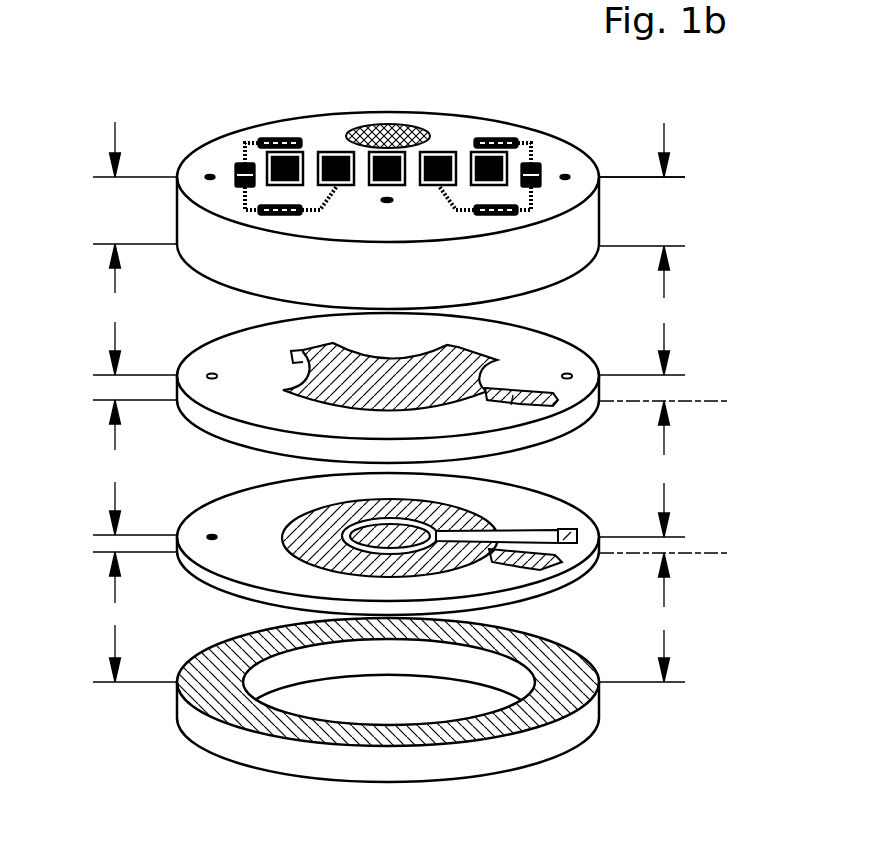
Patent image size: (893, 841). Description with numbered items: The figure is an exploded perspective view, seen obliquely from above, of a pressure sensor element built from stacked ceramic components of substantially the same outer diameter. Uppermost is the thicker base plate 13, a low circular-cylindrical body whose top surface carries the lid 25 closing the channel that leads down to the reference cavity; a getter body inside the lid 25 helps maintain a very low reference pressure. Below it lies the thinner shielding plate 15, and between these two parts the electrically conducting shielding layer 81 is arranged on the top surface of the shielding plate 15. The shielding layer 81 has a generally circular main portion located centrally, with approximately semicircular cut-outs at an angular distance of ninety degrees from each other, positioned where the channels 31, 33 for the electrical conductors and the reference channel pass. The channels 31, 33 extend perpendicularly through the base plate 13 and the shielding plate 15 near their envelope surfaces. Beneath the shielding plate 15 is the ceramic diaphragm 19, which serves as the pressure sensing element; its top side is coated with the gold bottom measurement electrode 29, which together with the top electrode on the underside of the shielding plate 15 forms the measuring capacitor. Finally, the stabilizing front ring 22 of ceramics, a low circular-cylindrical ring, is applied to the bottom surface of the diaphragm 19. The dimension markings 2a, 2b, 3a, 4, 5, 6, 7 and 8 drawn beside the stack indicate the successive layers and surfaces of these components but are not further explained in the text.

The base plate 13 is at (217, 150).
The lid 25 is at (387, 130).
The channel 31 is at (568, 174).
The channel 33 is at (206, 178).
The shielding plate 15 is at (210, 356).
The shielding layer 81 is at (303, 355).
The diaphragm 19 is at (240, 508).
The bottom measurement electrode 29 is at (413, 522).
The front ring 22 is at (217, 740).
The layer 2a is at (413, 149).
The layer 2b is at (683, 161).
The layer 3a is at (411, 271).
The layer 4 is at (405, 348).
The layer 5 is at (411, 428).
The layer 6 is at (406, 509).
The layer 7 is at (411, 579).
The layer 8 is at (406, 653).